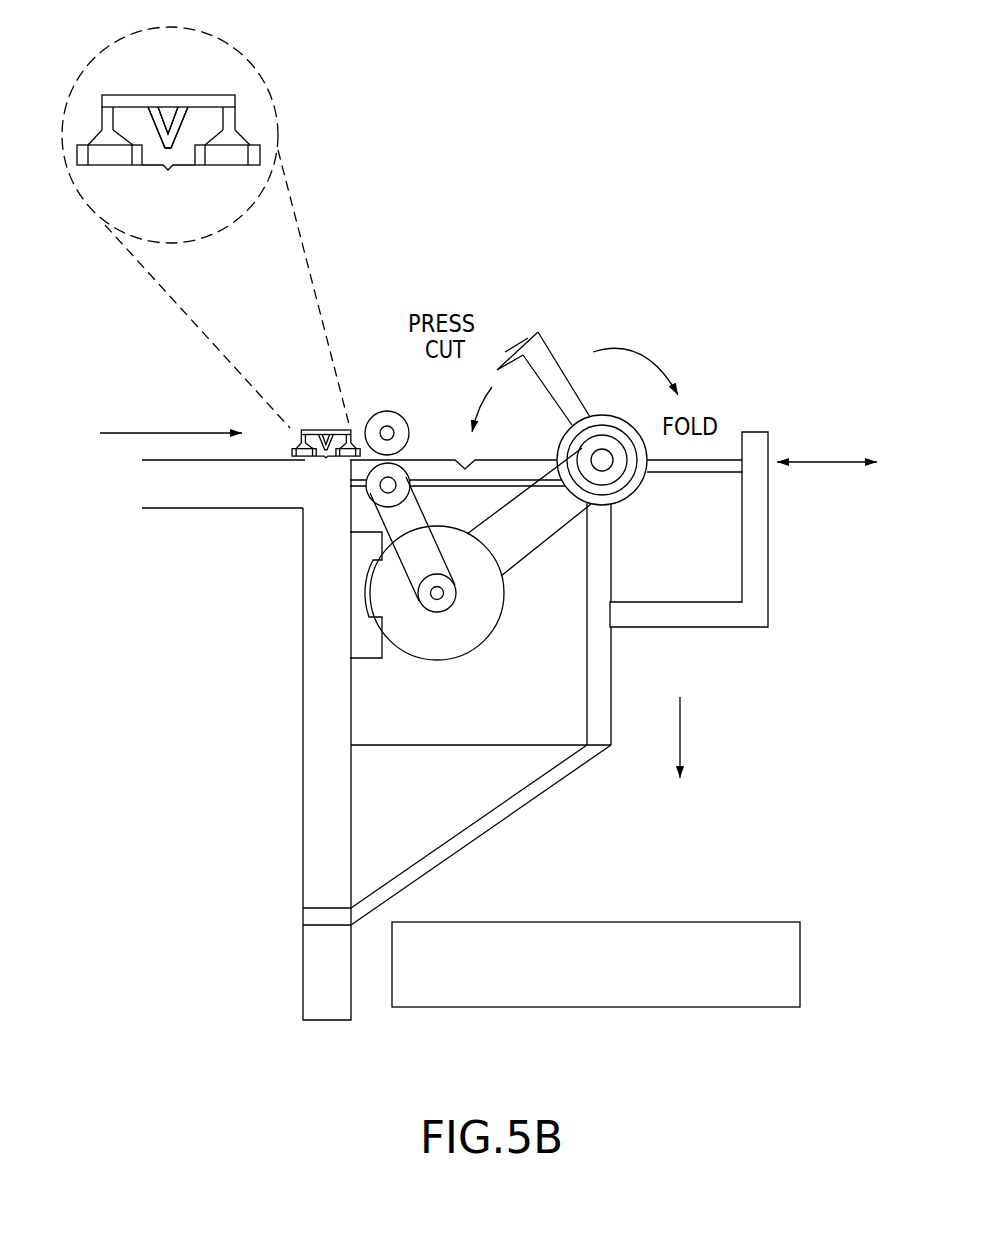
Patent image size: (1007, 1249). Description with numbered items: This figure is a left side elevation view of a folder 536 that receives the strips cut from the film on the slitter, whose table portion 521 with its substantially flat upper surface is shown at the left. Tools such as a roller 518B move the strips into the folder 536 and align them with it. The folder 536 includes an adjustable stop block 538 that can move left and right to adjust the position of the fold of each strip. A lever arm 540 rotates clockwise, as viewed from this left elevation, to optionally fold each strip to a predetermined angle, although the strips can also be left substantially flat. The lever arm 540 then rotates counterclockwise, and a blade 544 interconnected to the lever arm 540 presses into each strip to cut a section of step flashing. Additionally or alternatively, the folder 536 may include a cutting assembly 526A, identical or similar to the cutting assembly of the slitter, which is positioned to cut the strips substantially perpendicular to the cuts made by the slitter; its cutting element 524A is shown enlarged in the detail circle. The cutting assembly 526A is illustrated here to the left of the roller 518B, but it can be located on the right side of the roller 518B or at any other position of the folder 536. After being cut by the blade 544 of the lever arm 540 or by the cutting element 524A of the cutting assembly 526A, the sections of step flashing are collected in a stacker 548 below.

The cutting assembly 526A is at (233, 97).
The cutting element 524A is at (167, 147).
The folder 536 is at (723, 213).
The blade 544 is at (533, 334).
The lever arm 540 is at (548, 358).
The roller 518B is at (393, 420).
The adjustable stop block 538 is at (769, 432).
The table portion 521 is at (230, 497).
The stacker 548 is at (658, 922).